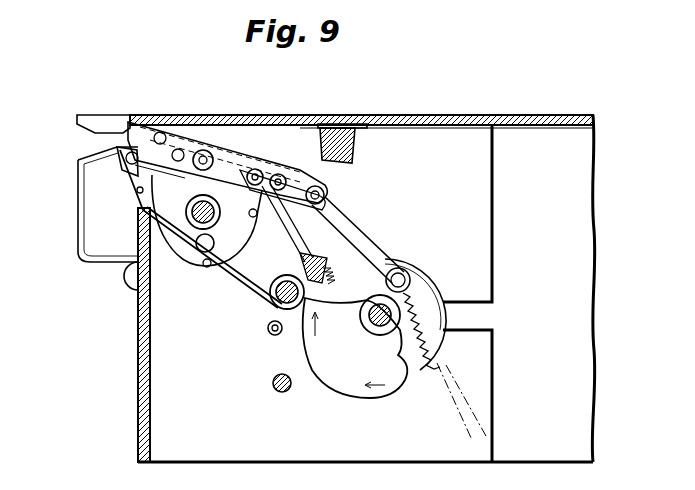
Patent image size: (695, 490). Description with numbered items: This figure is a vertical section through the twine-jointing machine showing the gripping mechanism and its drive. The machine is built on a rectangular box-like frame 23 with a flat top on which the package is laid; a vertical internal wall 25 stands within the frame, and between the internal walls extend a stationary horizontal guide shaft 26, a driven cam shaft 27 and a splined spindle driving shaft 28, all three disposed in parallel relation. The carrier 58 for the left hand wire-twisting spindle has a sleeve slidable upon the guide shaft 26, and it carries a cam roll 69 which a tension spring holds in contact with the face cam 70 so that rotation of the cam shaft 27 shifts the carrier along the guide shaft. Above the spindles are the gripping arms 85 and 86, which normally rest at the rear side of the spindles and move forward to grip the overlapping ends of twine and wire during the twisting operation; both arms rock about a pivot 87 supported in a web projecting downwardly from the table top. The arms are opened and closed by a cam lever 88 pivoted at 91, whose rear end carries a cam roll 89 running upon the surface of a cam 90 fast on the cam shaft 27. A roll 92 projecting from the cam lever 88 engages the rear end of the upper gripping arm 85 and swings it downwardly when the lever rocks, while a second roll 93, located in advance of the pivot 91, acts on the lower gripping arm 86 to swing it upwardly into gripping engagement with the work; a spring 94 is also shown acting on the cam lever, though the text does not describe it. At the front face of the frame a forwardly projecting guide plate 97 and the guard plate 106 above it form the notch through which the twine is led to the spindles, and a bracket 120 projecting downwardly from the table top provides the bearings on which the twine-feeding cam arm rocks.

The frame 23 is at (592, 380).
The internal wall 25 is at (485, 378).
The guide shaft 26 is at (276, 304).
The cam shaft 27 is at (374, 308).
The spindle driving shaft 28 is at (194, 211).
The carrier 58 is at (228, 280).
The cam roll 69 is at (323, 265).
The face cam 70 is at (438, 300).
The upper gripping arm 85 is at (150, 124).
The lower gripping arm 86 is at (132, 166).
The pivot 87 is at (188, 176).
The cam lever 88 is at (362, 238).
The cam roll 89 is at (410, 272).
The cam 90 is at (306, 353).
The pivot 91 is at (286, 200).
The roll 92 is at (326, 196).
The second roll 93 is at (262, 170).
The spring 94 is at (445, 360).
The guide plate 97 is at (78, 234).
The guard plate 106 is at (92, 123).
The bracket 120 is at (350, 150).